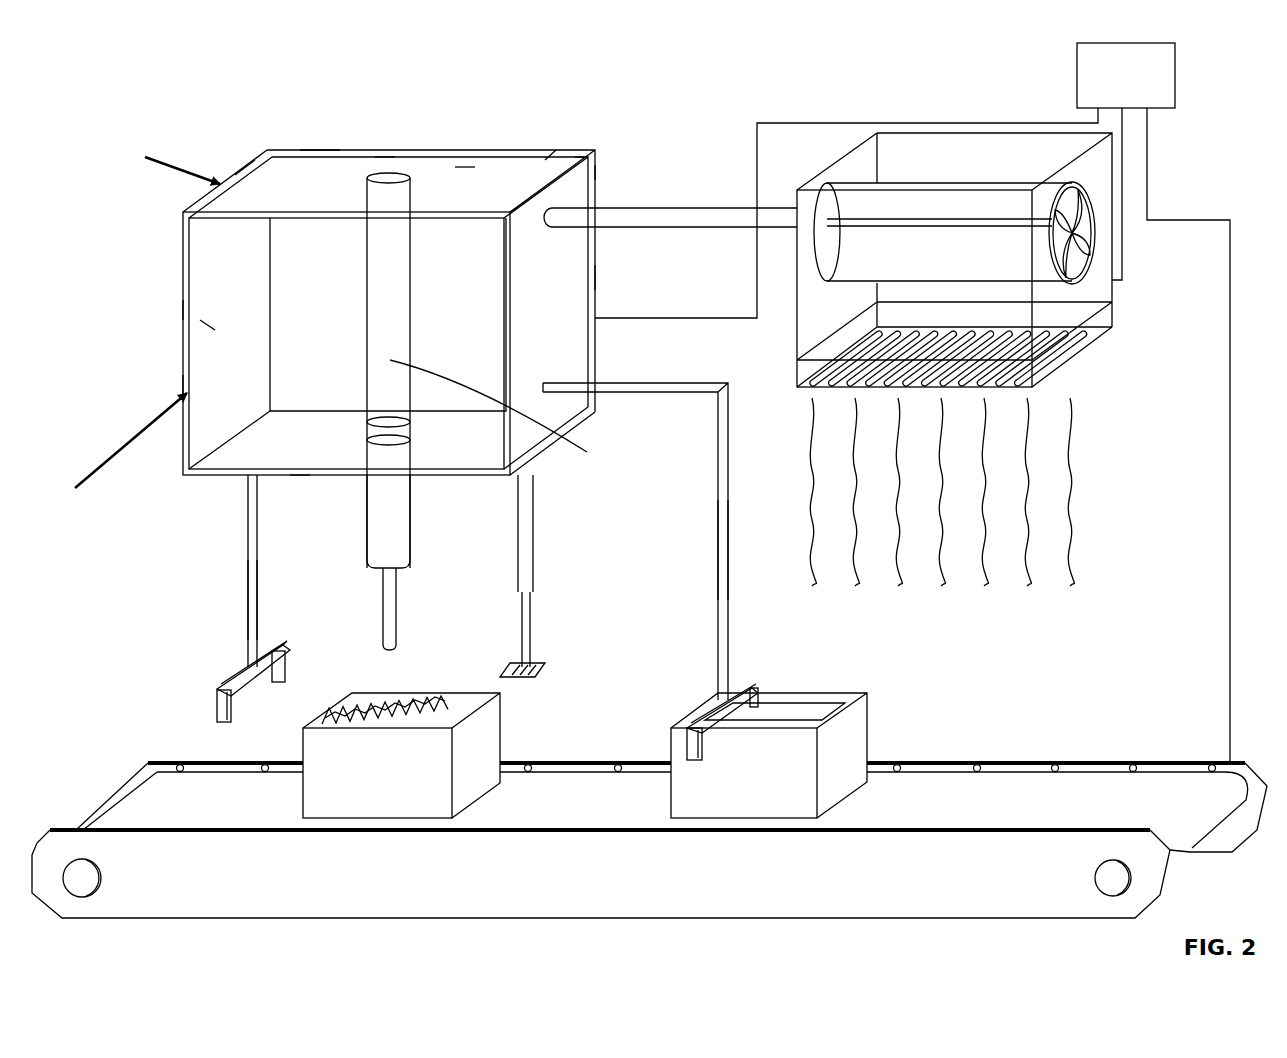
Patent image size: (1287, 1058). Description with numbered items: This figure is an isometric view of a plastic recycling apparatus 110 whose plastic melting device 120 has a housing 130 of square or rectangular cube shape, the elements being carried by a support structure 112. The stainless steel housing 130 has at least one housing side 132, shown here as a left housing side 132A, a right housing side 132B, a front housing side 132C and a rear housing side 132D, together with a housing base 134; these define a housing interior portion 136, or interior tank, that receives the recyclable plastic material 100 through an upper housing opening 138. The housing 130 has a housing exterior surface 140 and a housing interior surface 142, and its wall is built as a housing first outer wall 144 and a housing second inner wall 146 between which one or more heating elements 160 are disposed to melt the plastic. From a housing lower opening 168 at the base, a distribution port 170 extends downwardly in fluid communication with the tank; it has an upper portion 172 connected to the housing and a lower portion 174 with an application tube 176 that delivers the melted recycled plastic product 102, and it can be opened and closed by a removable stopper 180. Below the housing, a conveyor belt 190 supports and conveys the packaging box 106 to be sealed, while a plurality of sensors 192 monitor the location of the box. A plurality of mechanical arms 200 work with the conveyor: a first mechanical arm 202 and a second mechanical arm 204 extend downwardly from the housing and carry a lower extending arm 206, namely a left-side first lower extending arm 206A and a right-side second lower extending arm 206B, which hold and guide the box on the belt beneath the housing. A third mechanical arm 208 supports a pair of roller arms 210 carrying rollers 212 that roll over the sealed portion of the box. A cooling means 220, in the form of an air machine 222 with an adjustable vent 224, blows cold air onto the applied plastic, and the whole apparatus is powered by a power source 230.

The plastic material 100 is at (510, 167).
The recycled plastic product 102 is at (415, 722).
The packaging box 106 is at (318, 748).
The plastic recycling apparatus 110 is at (203, 82).
The support structure 112 is at (693, 220).
The plastic melting device 120 is at (320, 158).
The housing 130 is at (183, 253).
The housing side 132 is at (183, 277).
The left housing side 132A is at (183, 310).
The right housing side 132B is at (597, 277).
The front housing side 132C is at (207, 327).
The rear housing side 132D is at (385, 157).
The housing base 134 is at (297, 477).
The housing interior portion 136 is at (550, 160).
The upper housing opening 138 is at (465, 167).
The housing exterior surface 140 is at (183, 385).
The housing interior surface 142 is at (245, 183).
The housing first outer wall 144 is at (595, 172).
The housing second inner wall 146 is at (580, 158).
The heating element 160 is at (77, 592).
The housing lower opening 168 is at (363, 437).
The distribution port 170 is at (437, 524).
The upper portion 172 is at (415, 498).
The lower portion 174 is at (450, 609).
The application tube 176 is at (397, 612).
The removable stopper 180 is at (513, 413).
The conveyor belt 190 is at (130, 783).
The sensors 192 is at (265, 765).
The mechanical arms 200 is at (310, 600).
The first mechanical arm 202 is at (252, 603).
The second mechanical arm 204 is at (720, 540).
The lower extending arm 206 is at (240, 675).
The first lower extending arm 206A is at (217, 702).
The second lower extending arm 206B is at (283, 677).
The third mechanical arm 208 is at (530, 598).
The roller arms 210 is at (576, 679).
The roller 212 is at (545, 672).
The cooling means 220 is at (1028, 260).
The air machine 222 is at (1113, 182).
The vent 224 is at (1048, 363).
The power source 230 is at (1077, 75).